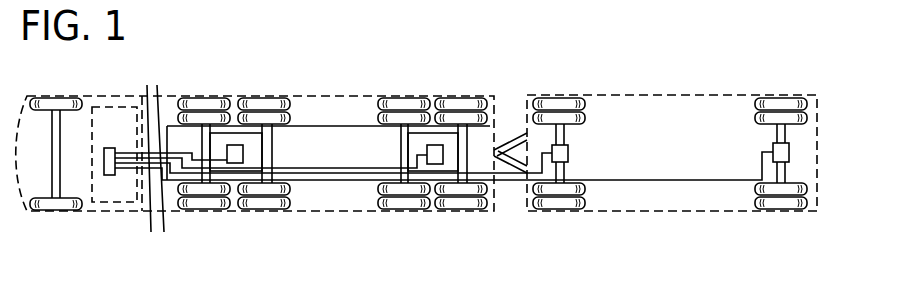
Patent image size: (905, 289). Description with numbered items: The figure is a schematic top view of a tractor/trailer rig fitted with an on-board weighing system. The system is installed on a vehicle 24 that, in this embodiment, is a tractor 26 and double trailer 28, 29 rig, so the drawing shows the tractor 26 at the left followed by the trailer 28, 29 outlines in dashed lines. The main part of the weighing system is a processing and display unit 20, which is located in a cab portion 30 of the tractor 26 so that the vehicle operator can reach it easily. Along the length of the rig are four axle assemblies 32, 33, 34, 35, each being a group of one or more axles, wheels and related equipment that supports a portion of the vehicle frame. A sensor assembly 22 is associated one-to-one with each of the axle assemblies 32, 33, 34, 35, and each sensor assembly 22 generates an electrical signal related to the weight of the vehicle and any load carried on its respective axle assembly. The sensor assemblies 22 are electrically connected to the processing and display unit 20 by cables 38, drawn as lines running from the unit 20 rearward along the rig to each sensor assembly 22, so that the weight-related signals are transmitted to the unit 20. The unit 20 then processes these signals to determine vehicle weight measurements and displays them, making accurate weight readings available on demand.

The processing and display unit 20 is at (110, 176).
The sensor assemblies 22 is at (243, 150).
The vehicle 24 is at (467, 220).
The tractor 26 is at (73, 213).
The double trailer (first trailer) 28 is at (320, 213).
The double trailer (second trailer) 29 is at (665, 212).
The cab portion 30 is at (111, 104).
The axle assembly 32 is at (213, 212).
The axle assembly 33 is at (410, 212).
The axle assembly 34 is at (566, 212).
The axle assembly 35 is at (787, 212).
The cables 38 is at (444, 160).